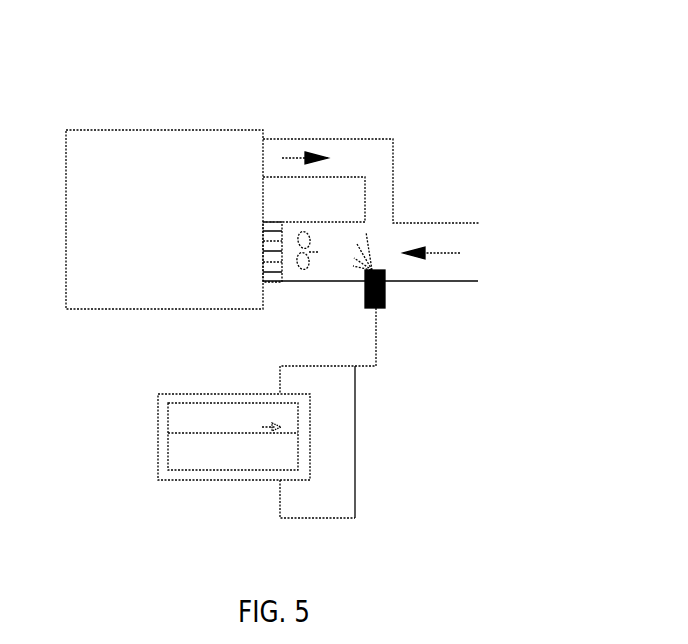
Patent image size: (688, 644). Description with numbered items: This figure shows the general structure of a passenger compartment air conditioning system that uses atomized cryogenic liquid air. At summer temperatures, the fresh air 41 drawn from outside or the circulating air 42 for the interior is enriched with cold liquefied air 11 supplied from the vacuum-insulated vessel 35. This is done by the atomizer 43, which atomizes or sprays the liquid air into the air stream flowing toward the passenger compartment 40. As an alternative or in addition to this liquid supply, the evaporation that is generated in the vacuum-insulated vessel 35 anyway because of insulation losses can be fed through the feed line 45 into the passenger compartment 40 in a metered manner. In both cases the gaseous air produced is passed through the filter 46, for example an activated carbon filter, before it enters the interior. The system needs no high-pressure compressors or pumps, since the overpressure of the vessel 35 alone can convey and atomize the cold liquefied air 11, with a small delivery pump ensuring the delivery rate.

The cold liquefied air 11 is at (185, 452).
The vacuum-insulated vessel 35 is at (232, 482).
The passenger compartment 40 is at (133, 310).
The fresh air 41 is at (440, 253).
The circulating air 42 is at (300, 152).
The atomizer 43 is at (385, 297).
The feed line 45 is at (280, 382).
The filter 46 is at (272, 283).